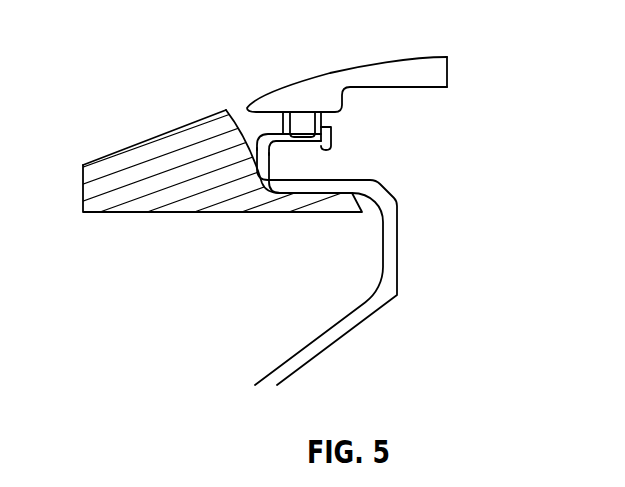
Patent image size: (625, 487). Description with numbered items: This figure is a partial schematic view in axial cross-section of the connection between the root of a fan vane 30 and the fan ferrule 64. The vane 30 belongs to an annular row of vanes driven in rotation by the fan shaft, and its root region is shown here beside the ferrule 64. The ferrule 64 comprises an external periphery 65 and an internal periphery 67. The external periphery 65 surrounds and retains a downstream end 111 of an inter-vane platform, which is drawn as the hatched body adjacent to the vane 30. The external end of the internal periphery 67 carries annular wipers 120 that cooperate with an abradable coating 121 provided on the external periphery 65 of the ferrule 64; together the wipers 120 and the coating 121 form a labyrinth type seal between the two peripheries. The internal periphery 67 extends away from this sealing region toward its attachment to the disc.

The vane 30 is at (147, 78).
The downstream end of inter-vane platform 111 is at (226, 110).
The external periphery 65 is at (373, 63).
The ferrule 64 is at (438, 60).
The abradable coating 121 is at (301, 113).
The annular wipers 120 is at (323, 125).
The internal periphery 67 is at (398, 250).